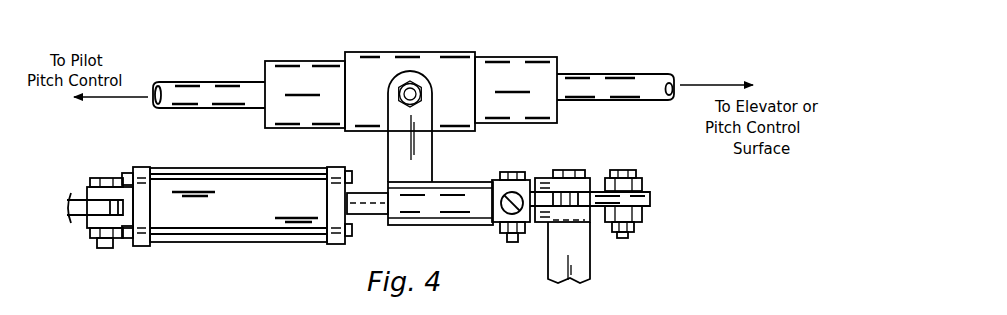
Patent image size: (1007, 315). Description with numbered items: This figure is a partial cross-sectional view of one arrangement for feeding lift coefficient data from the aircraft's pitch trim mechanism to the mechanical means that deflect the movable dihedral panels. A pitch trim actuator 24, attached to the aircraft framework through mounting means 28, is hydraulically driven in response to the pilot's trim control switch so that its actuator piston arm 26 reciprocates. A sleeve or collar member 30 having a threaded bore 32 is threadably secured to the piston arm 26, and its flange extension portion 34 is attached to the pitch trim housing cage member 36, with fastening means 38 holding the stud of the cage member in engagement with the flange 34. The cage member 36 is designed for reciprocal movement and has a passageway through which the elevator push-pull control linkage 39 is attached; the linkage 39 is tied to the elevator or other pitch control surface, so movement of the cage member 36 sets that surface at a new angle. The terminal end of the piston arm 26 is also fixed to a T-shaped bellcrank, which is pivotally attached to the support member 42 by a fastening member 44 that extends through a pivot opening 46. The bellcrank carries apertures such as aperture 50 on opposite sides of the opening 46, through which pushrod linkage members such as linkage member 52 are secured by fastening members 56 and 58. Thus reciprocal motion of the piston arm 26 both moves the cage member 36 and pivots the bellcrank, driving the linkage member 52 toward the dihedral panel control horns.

The pitch trim actuator 24 is at (222, 242).
The actuator piston arm 26 is at (375, 215).
The mounting means 28 is at (83, 226).
The sleeve or collar member 30 is at (447, 227).
The threaded bore 32 is at (373, 203).
The flange extension portion 34 is at (433, 155).
The pitch trim housing cage member 36 is at (445, 50).
The fastening means 38 is at (402, 88).
The elevator push-pull control linkage 39 is at (610, 74).
The support member 42 is at (558, 283).
The fastening member 44 is at (571, 186).
The pivot opening 46 is at (595, 207).
The aperture 50 is at (652, 196).
The linkage member 52 is at (528, 182).
The fastening member 56 is at (633, 231).
The fastening member 58 is at (513, 245).